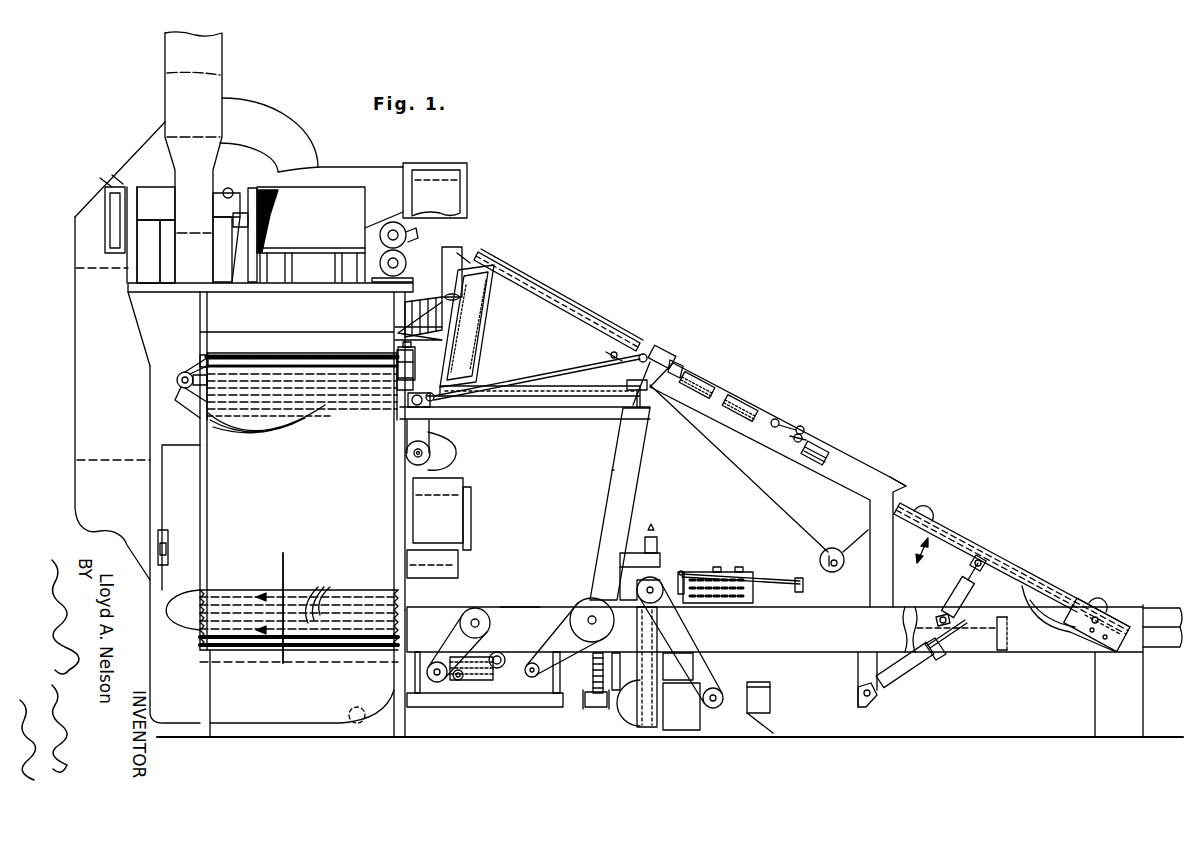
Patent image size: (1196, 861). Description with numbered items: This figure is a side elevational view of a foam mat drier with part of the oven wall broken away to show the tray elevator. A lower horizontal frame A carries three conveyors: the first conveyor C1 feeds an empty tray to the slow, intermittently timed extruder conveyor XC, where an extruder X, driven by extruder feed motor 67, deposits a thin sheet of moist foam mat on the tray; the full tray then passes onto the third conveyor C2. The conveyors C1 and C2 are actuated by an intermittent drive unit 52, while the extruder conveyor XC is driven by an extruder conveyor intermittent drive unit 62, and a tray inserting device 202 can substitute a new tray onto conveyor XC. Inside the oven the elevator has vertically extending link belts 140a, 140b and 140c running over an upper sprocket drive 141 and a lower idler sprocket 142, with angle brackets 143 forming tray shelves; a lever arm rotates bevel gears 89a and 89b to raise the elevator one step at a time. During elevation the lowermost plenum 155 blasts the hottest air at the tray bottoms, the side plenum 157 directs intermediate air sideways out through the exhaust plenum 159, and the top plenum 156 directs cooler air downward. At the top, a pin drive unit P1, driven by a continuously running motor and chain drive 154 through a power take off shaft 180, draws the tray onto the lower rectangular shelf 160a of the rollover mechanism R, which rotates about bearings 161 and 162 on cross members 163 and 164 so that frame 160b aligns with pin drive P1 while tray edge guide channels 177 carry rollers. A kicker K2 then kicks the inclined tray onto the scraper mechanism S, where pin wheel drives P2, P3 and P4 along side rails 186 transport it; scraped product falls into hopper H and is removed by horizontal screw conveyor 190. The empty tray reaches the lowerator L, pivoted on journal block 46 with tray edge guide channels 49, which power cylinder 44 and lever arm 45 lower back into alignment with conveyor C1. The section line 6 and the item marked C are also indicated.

The kicker K2 is at (457, 253).
The tray edge guide channel 177 is at (540, 283).
The tray receiving frame 160b is at (567, 304).
The rollover tray receiving mechanism R is at (600, 315).
The frame cross member 163 is at (487, 297).
The bearing 161 is at (447, 330).
The frame cross member 164 is at (610, 354).
The bearing 162 is at (647, 357).
The pin wheel drive P2 is at (662, 352).
The lower rectangular shelf 160a is at (528, 390).
The power take off shaft 180 is at (547, 380).
The pin drive unit P1 is at (432, 405).
The motor and chain drive 154 is at (452, 445).
The side plenum 157 is at (457, 515).
The third conveyor C2 is at (515, 607).
The product removal scraper mechanism S is at (740, 387).
The side rail 186 is at (750, 413).
The pin wheel drive P3 is at (790, 417).
The pin wheel drive P4 is at (893, 477).
The product removal hopper H is at (793, 513).
The horizontal screw conveyor 190 is at (834, 548).
The lower horizontal frame A is at (831, 657).
The first conveyor C1 is at (922, 613).
The extruder X is at (658, 582).
The tray inserting device 202 is at (700, 572).
The extruder conveyor XC is at (787, 600).
The extruder feed motor 67 is at (752, 688).
The pump C is at (593, 673).
The extruder conveyor intermittent drive unit 62 is at (530, 677).
The intermittent drive unit 52 is at (432, 680).
The lowerator L is at (973, 528).
The tray edge guide channel 49 is at (1027, 568).
The journal block 46 is at (1093, 610).
The lever arm 45 is at (967, 605).
The power cylinder 44 is at (918, 662).
The top plenum 156 is at (306, 321).
The exhaust plenum 159 is at (187, 498).
The lower idler sprocket 142 is at (204, 590).
The upper sprocket drive 141 is at (205, 362).
The bevel gear 89a is at (177, 381).
The bevel gear 89b is at (170, 393).
The angle bracket 143 is at (320, 393).
The link belt 140c is at (308, 437).
The link belt 140a is at (237, 593).
The link belt 140b is at (377, 597).
The section line 6 is at (283, 608).
The lowermost plenum 155 is at (316, 700).